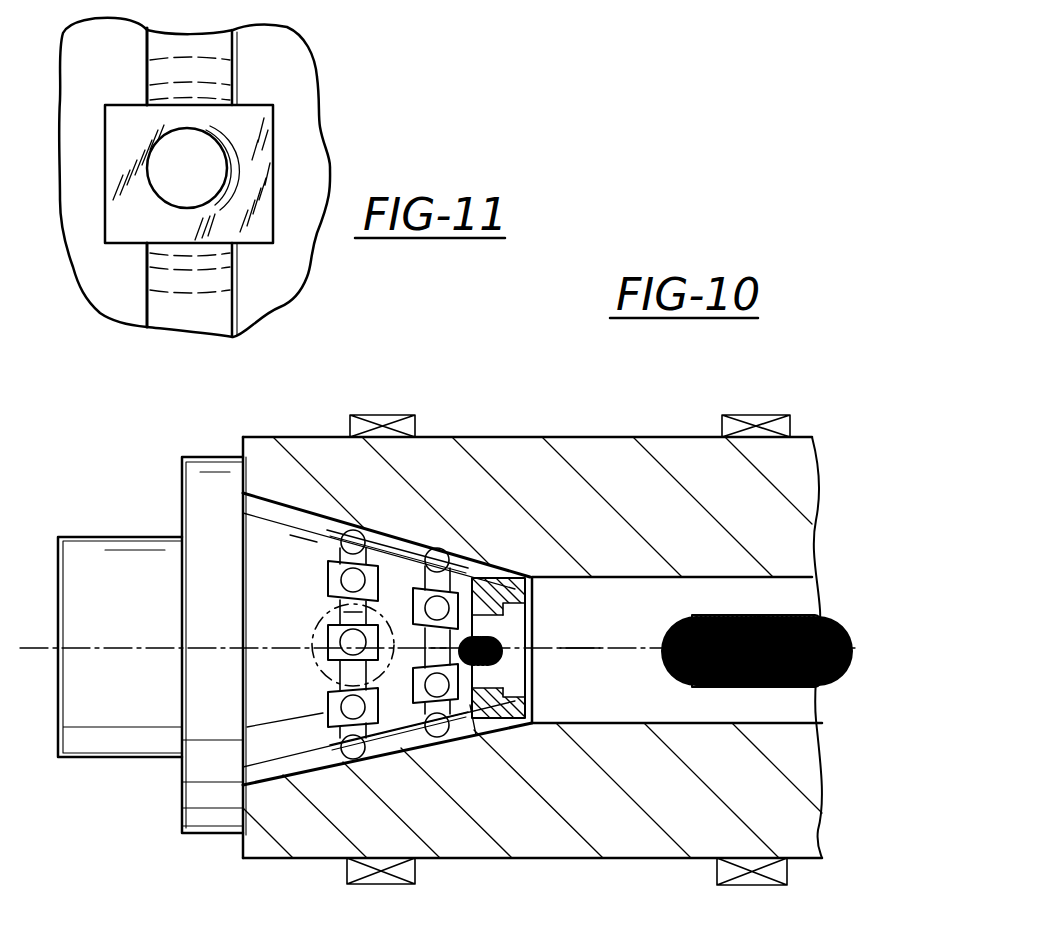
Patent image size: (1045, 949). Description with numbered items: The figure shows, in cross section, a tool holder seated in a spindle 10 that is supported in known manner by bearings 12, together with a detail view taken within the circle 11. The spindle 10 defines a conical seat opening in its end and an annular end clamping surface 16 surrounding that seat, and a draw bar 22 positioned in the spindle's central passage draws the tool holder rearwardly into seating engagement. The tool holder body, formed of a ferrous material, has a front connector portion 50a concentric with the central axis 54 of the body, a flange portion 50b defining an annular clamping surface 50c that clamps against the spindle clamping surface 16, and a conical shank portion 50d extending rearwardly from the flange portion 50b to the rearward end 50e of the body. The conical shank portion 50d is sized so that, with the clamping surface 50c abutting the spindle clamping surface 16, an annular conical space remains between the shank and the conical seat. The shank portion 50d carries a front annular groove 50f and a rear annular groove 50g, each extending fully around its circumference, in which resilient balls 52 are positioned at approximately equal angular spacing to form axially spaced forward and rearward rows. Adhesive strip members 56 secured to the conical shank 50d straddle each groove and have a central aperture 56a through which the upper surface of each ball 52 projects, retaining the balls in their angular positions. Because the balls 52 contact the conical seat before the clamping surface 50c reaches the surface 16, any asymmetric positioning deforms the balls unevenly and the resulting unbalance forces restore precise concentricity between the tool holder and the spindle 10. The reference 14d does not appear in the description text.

In FIG. 10, the spindle 10 is at (597, 424).
In FIG. 10, the circle 11 is at (337, 605).
In FIG. 10, the bearings 12 is at (414, 415).
In FIG. 10, the threaded end cap 14d is at (497, 573).
In FIG. 10, the annular end clamping surface 16 is at (243, 441).
In FIG. 10, the draw bar 22 is at (735, 617).
In FIG. 10, the front connector portion 50a is at (127, 557).
In FIG. 10, the flange portion 50b is at (180, 797).
In FIG. 10, the annular clamping surface 50c is at (243, 822).
In FIG. 11, the annular clamping surface 50c is at (213, 37).
In FIG. 10, the conical shank portion 50d is at (410, 552).
In FIG. 11, the conical shank portion 50d is at (277, 290).
In FIG. 10, the rearward end 50e is at (532, 591).
In FIG. 10, the front annular groove 50f is at (340, 690).
In FIG. 10, the rear annular groove 50g is at (468, 712).
In FIG. 10, the balls 52 is at (353, 528).
In FIG. 11, the balls 52 is at (197, 186).
In FIG. 10, the central axis 54 is at (583, 652).
In FIG. 11, the adhesive strip members 56 is at (276, 168).
In FIG. 11, the central aperture 56a is at (147, 172).